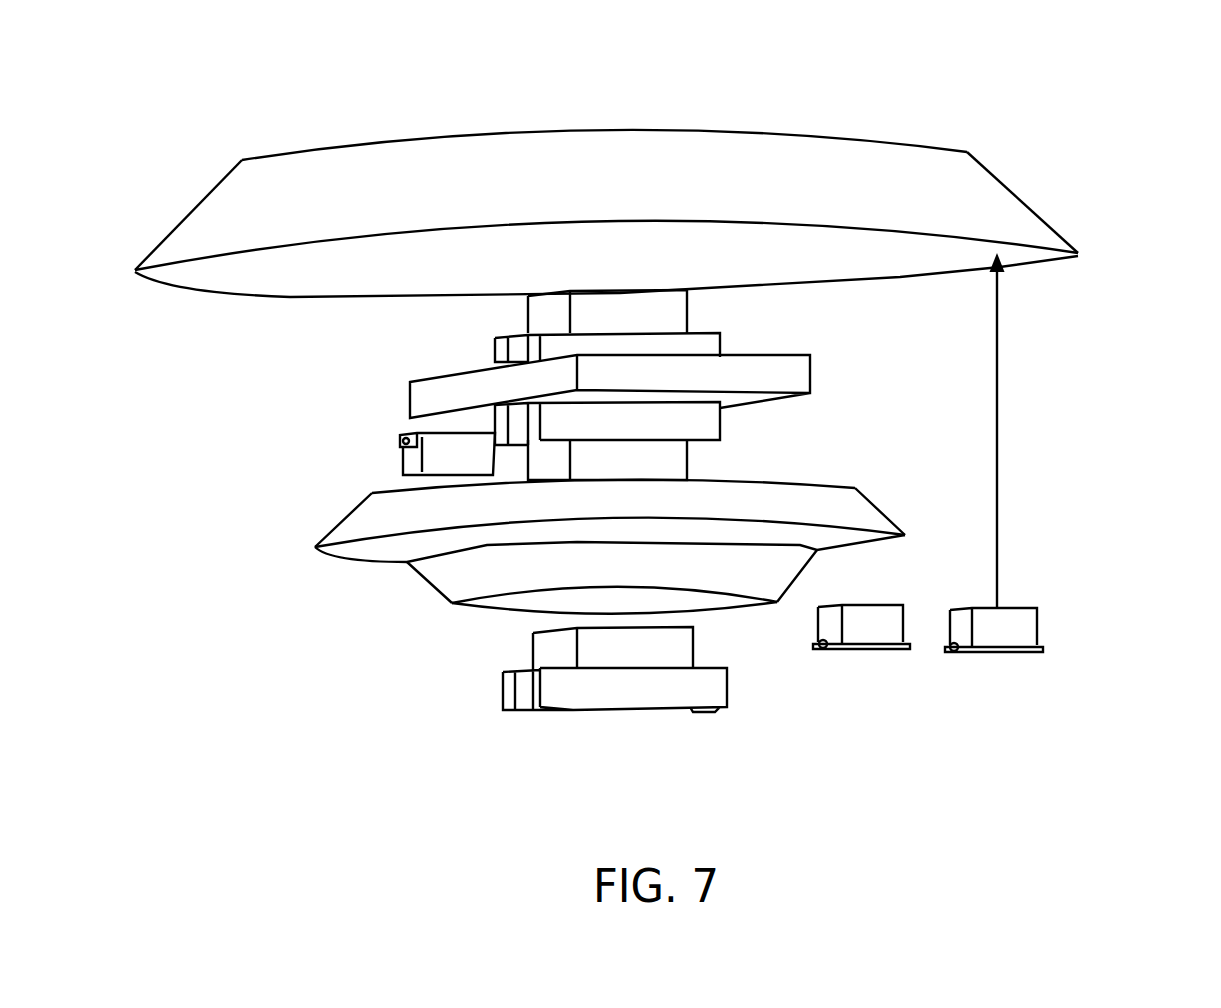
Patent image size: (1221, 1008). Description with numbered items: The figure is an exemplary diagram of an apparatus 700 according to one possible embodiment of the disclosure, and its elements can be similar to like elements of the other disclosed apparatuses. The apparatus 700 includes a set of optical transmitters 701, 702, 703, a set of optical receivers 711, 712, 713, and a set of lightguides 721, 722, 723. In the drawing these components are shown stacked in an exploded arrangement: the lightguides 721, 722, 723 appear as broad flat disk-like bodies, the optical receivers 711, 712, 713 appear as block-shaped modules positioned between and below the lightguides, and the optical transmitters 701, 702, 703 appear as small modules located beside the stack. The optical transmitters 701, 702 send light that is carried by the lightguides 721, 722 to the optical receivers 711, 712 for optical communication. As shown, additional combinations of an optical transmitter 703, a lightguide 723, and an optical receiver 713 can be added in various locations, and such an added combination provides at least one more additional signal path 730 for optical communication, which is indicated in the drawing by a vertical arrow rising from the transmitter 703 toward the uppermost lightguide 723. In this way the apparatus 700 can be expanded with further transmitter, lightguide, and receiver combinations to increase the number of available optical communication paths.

The apparatus 700 is at (1178, 70).
The optical transmitter 701 is at (400, 437).
The optical transmitter 702 is at (878, 652).
The additional optical transmitter 703 is at (1040, 653).
The optical receiver 711 is at (648, 708).
The optical receiver 712 is at (710, 427).
The additional optical receiver 713 is at (670, 318).
The lightguide 721 is at (477, 600).
The lightguide 722 is at (358, 545).
The additional lightguide 723 is at (275, 275).
The additional signal path 730 is at (1002, 338).